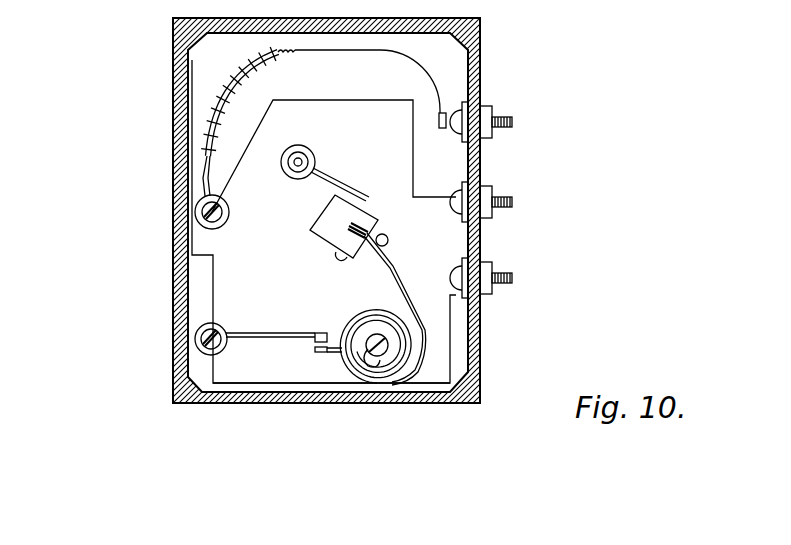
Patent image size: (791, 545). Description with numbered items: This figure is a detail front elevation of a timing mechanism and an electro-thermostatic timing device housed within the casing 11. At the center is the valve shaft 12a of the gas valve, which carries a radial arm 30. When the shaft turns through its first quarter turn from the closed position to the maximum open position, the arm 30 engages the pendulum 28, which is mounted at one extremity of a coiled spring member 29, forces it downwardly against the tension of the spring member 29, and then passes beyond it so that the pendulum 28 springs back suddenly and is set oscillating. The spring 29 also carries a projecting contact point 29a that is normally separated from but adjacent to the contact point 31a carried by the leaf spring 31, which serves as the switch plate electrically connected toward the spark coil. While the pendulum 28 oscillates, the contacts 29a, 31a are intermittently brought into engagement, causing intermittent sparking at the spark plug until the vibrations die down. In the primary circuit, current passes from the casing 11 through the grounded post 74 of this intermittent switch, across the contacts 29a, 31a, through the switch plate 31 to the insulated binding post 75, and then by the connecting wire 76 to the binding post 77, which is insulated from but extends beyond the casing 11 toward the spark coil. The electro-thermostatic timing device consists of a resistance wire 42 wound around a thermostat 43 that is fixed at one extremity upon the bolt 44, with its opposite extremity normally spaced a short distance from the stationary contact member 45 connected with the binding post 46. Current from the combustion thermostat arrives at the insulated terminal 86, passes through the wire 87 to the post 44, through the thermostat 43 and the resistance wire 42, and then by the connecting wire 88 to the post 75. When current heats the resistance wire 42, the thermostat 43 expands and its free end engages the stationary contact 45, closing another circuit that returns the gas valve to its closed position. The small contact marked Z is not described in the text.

The casing 11 is at (176, 320).
The valve shaft 12a is at (314, 156).
The pendulum 28 is at (325, 230).
The coiled spring member 29 is at (400, 278).
The contact point 29a is at (310, 352).
The radial arm 30 is at (340, 180).
The leaf spring 31 is at (254, 331).
The contact point 31a is at (320, 331).
The resistance wire 42 is at (220, 88).
The thermostat 43 is at (402, 60).
The bolt 44 is at (203, 212).
The stationary contact member 45 is at (458, 116).
The binding post 46 is at (510, 115).
The grounded post 74 is at (380, 346).
The insulated binding post 75 is at (201, 349).
The connecting wire 76 is at (315, 385).
The binding post 77 is at (494, 270).
The insulated terminal 86 is at (496, 195).
The wire 87 is at (414, 183).
The connecting wire 88 is at (190, 247).
The contact Z is at (389, 236).